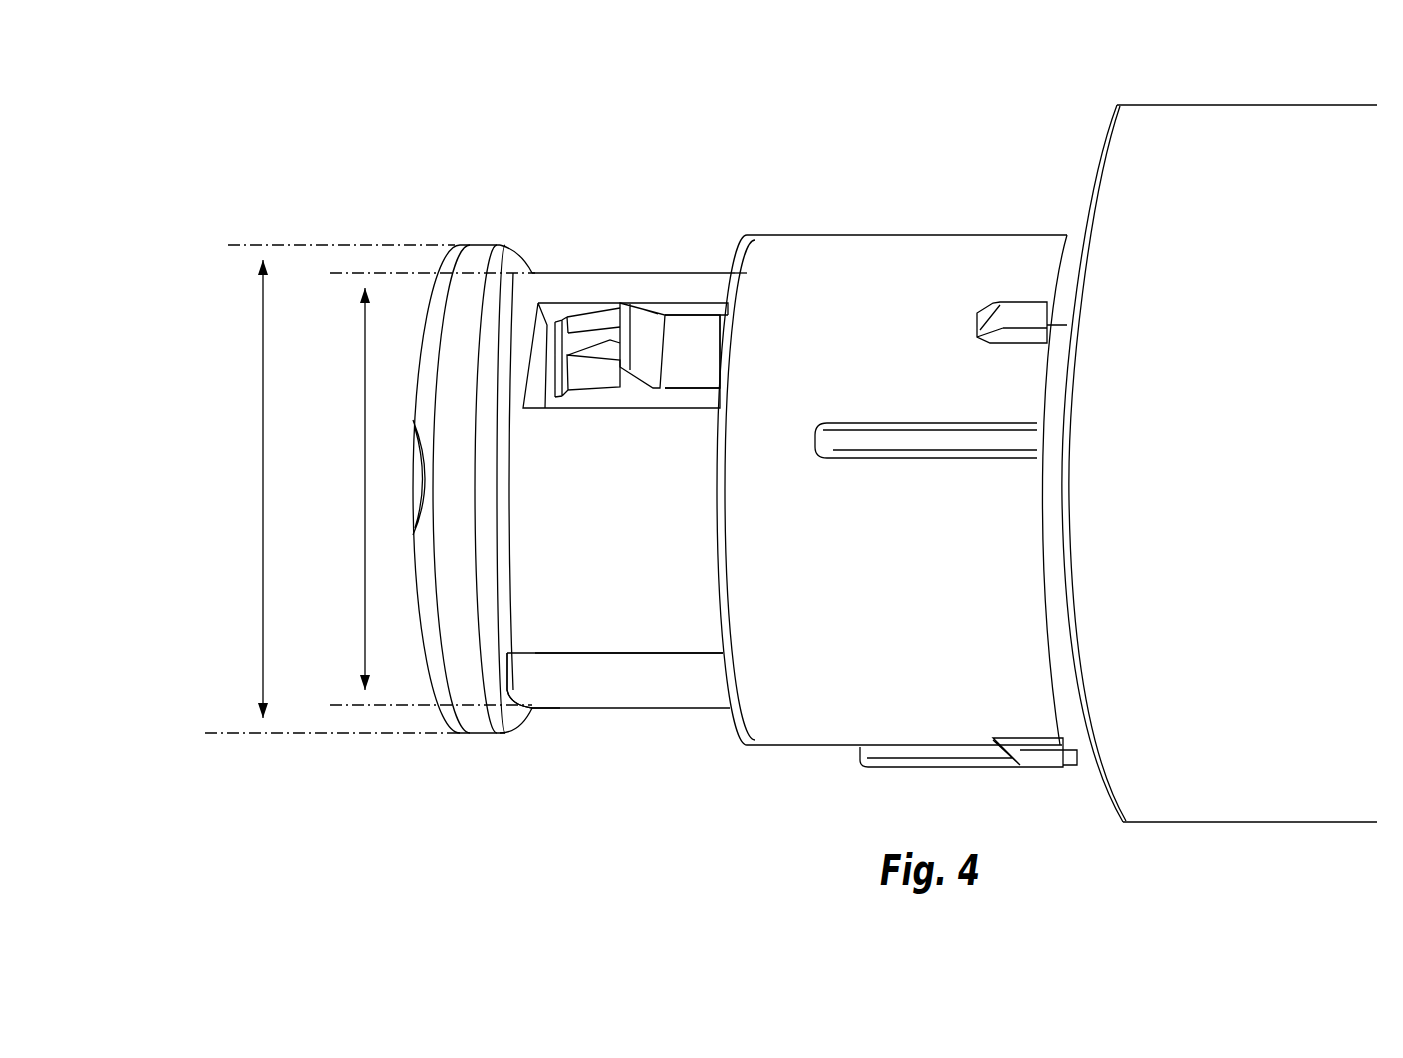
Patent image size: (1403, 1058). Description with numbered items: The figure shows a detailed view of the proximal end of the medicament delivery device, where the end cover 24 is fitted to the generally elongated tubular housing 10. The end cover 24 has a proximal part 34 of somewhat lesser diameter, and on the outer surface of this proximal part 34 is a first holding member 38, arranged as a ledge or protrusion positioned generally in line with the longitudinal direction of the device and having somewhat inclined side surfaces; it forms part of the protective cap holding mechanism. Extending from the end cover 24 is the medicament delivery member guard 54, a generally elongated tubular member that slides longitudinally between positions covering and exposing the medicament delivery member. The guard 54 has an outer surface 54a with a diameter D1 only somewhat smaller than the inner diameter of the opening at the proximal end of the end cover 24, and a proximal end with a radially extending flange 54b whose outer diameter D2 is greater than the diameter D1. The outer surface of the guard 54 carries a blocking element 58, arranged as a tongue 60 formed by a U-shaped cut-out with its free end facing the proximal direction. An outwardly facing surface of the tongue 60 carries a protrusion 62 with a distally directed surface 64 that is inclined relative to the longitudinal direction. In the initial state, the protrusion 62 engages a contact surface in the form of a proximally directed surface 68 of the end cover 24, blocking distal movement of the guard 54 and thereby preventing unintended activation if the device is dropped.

The housing 10 is at (1252, 485).
The end cover 24 is at (831, 203).
The proximal part 34 is at (931, 648).
The first holding member 38 is at (1013, 307).
The medicament delivery member guard 54 is at (582, 538).
The outer surface 54a is at (577, 596).
The flange 54b is at (462, 581).
The blocking element 58 is at (463, 210).
The tongue 60 is at (677, 365).
The protrusion 62 is at (667, 317).
The distally directed surface 64 is at (652, 343).
The proximally directed surface 68 is at (731, 258).
The diameter D1 is at (354, 492).
The outer diameter D2 is at (253, 447).